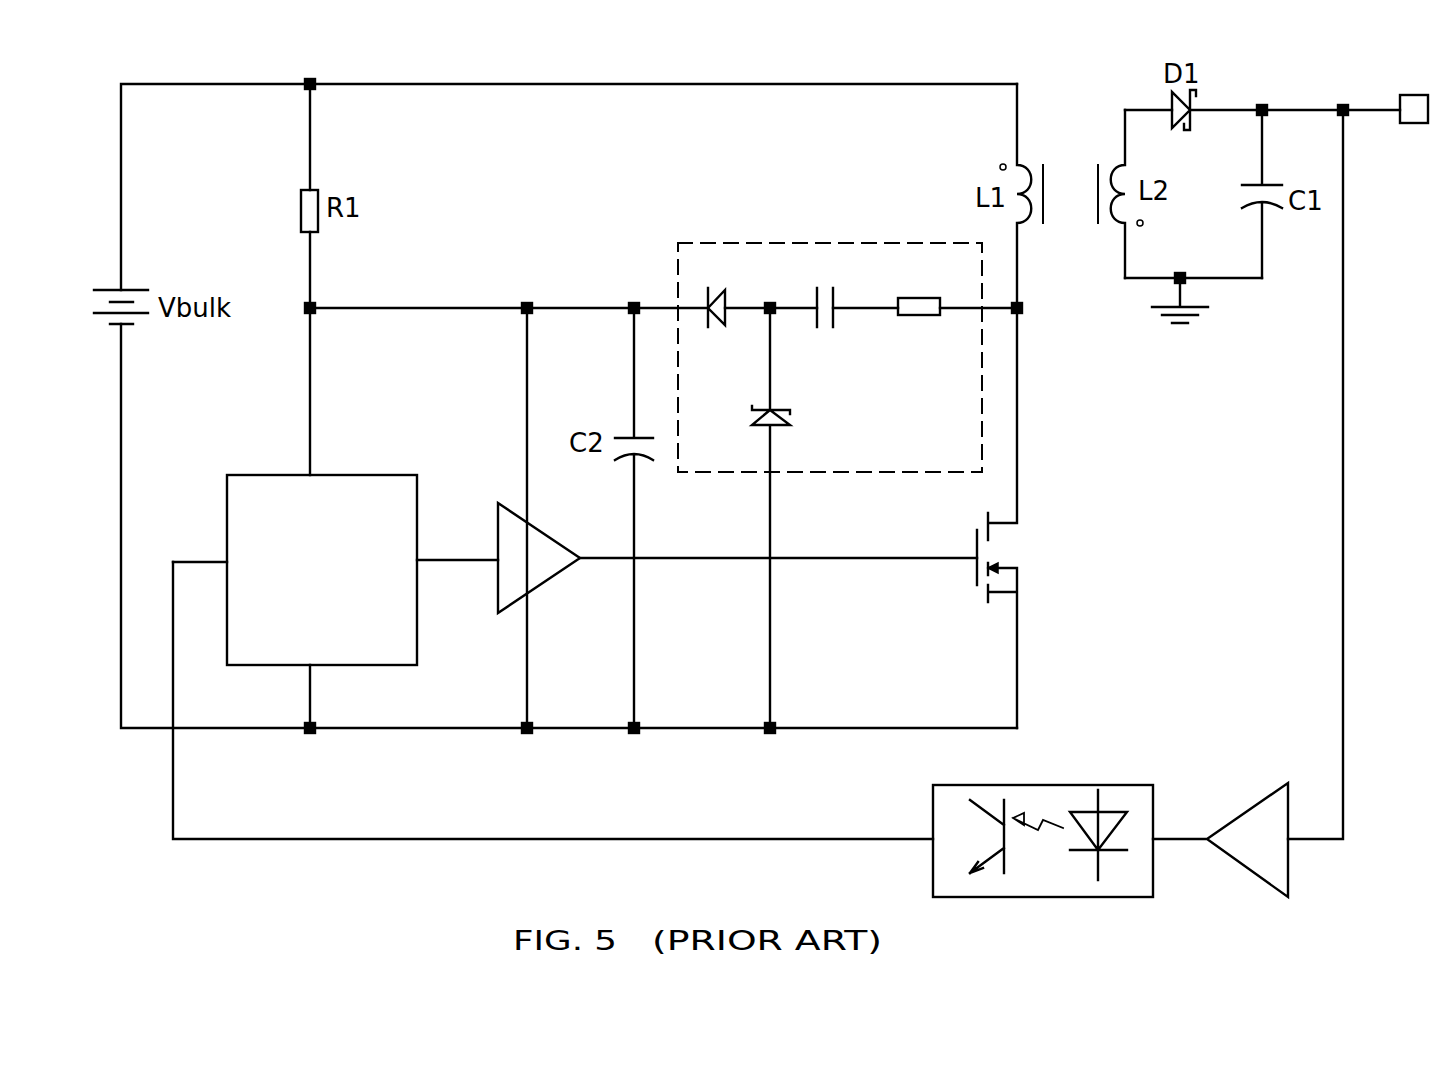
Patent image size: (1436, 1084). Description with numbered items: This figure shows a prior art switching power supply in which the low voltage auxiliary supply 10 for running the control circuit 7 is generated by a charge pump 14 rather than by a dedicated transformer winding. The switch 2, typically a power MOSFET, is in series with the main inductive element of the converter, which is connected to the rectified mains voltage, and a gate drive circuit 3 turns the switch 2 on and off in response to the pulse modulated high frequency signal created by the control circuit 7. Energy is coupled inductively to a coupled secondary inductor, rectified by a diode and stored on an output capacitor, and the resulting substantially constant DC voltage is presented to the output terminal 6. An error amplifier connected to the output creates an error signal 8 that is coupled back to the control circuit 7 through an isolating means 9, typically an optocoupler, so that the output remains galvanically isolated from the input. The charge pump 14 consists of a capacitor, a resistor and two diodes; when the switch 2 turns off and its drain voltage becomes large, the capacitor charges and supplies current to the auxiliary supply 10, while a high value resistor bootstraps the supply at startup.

The switch 2 is at (1017, 577).
The gate drive circuit 3 is at (510, 502).
The output terminal 6 is at (1410, 95).
The control circuit 7 is at (252, 475).
The error signal 8 is at (1175, 838).
The isolating means 9 is at (1053, 785).
The auxiliary supply 10 is at (443, 308).
The charge pump 14 is at (773, 243).